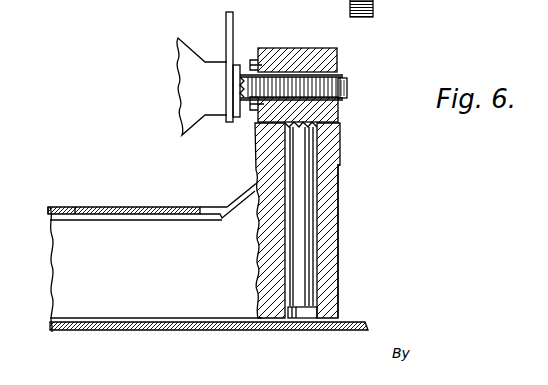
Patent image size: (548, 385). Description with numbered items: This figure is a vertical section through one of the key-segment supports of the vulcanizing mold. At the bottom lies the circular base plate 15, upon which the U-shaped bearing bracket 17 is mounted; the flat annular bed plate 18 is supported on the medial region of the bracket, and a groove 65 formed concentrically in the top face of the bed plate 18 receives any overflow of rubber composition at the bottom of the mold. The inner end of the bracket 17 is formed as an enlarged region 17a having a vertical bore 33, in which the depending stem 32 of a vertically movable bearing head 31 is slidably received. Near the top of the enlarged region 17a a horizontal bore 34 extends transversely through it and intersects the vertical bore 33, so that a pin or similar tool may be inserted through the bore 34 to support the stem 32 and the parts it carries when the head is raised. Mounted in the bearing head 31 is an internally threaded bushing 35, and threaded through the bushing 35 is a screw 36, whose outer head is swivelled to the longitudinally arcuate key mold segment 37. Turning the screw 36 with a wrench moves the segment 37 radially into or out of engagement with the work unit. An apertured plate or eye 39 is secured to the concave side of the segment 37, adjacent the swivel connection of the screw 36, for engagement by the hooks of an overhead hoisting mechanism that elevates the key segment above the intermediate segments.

The circular base plate 15 is at (286, 326).
The bearing bracket 17 is at (52, 262).
The enlarged region 17a is at (339, 250).
The bed plate 18 is at (146, 196).
The bearing head 31 is at (305, 48).
The stem 32 is at (305, 228).
The vertical bore 33 is at (317, 312).
The horizontal bore 34 is at (320, 190).
The internally threaded bushing 35 is at (254, 60).
The screw 36 is at (347, 84).
The mold segment 37 is at (190, 123).
The apertured plate 39 is at (226, 20).
The groove 65 is at (76, 213).